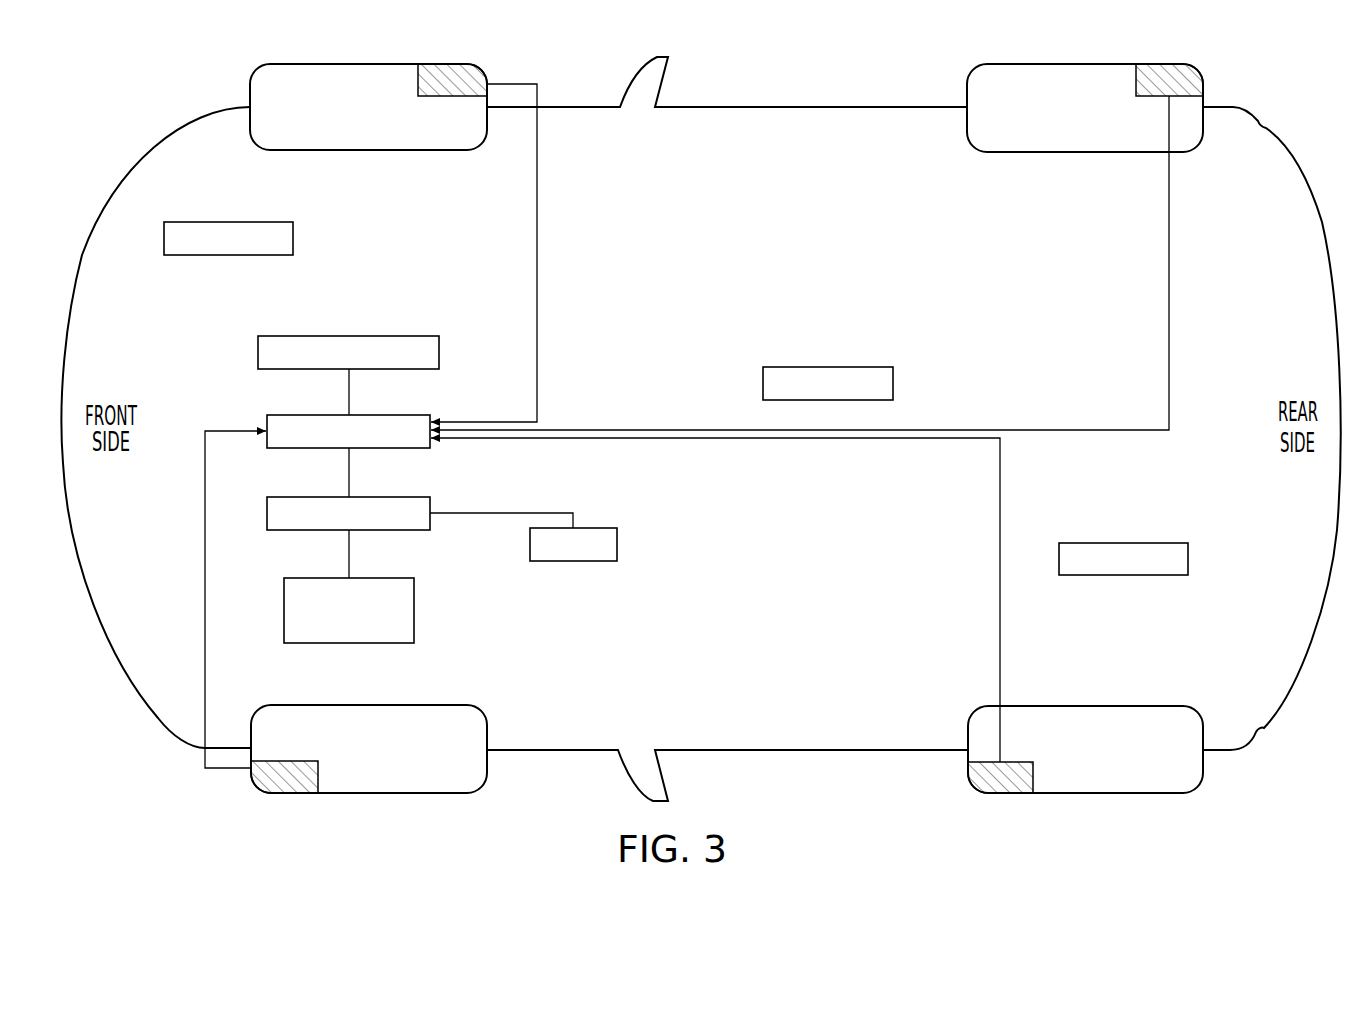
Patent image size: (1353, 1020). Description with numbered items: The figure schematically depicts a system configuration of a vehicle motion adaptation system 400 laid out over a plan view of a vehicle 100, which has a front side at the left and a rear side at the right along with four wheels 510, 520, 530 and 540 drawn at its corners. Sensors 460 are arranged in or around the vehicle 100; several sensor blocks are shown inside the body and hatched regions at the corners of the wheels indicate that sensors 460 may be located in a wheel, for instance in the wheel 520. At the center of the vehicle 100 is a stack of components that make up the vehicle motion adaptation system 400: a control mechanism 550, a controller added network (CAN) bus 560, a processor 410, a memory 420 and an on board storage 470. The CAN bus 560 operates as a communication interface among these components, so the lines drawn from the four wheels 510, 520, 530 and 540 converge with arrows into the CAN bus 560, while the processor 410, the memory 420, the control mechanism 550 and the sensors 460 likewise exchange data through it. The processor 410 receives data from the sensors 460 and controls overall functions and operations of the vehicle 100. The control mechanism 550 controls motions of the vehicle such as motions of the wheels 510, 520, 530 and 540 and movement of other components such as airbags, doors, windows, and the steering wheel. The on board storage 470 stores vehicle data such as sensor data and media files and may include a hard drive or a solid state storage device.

The vehicle 100 is at (766, 183).
The vehicle motion adaptation system 400 is at (784, 72).
The processor 410 is at (430, 497).
The memory 420 is at (617, 544).
The sensors 460 is at (447, 68).
The on board storage 470 is at (414, 610).
The wheel 510 is at (391, 121).
The wheel 520 is at (391, 763).
The wheel 530 is at (1106, 121).
The wheel 540 is at (1110, 763).
The control mechanism 550 is at (439, 353).
The controller added network (CAN) bus 560 is at (267, 418).